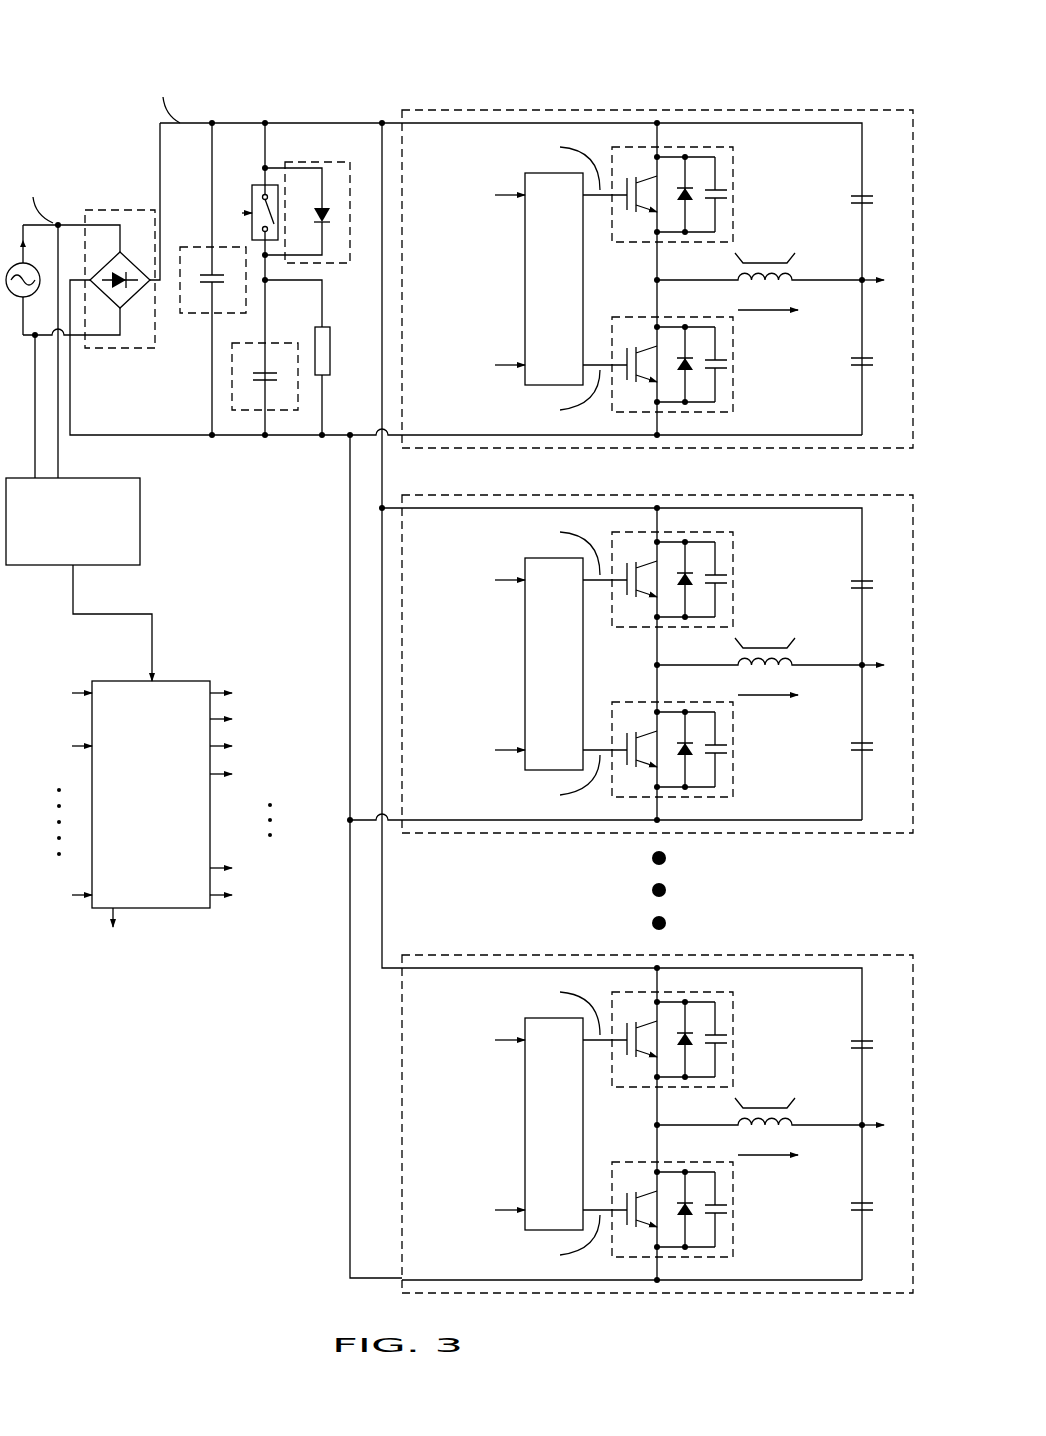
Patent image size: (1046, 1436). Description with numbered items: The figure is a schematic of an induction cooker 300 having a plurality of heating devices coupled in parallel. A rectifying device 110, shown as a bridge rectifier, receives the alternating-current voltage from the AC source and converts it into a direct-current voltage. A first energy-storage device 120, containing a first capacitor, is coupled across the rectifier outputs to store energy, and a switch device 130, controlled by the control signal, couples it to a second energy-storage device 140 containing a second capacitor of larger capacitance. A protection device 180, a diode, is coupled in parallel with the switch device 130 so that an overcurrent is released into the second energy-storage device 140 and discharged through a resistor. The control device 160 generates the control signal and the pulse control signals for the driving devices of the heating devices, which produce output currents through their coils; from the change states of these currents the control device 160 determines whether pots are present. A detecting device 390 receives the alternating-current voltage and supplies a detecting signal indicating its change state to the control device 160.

The induction cooker 300 is at (54, 23).
The rectifying device 110 is at (120, 210).
The first energy-storage device 120 is at (190, 313).
The switch device 130 is at (262, 185).
The second energy-storage device 140 is at (282, 343).
The protection device 180 is at (295, 160).
The control device 160 is at (185, 681).
The detecting device 390 is at (140, 523).